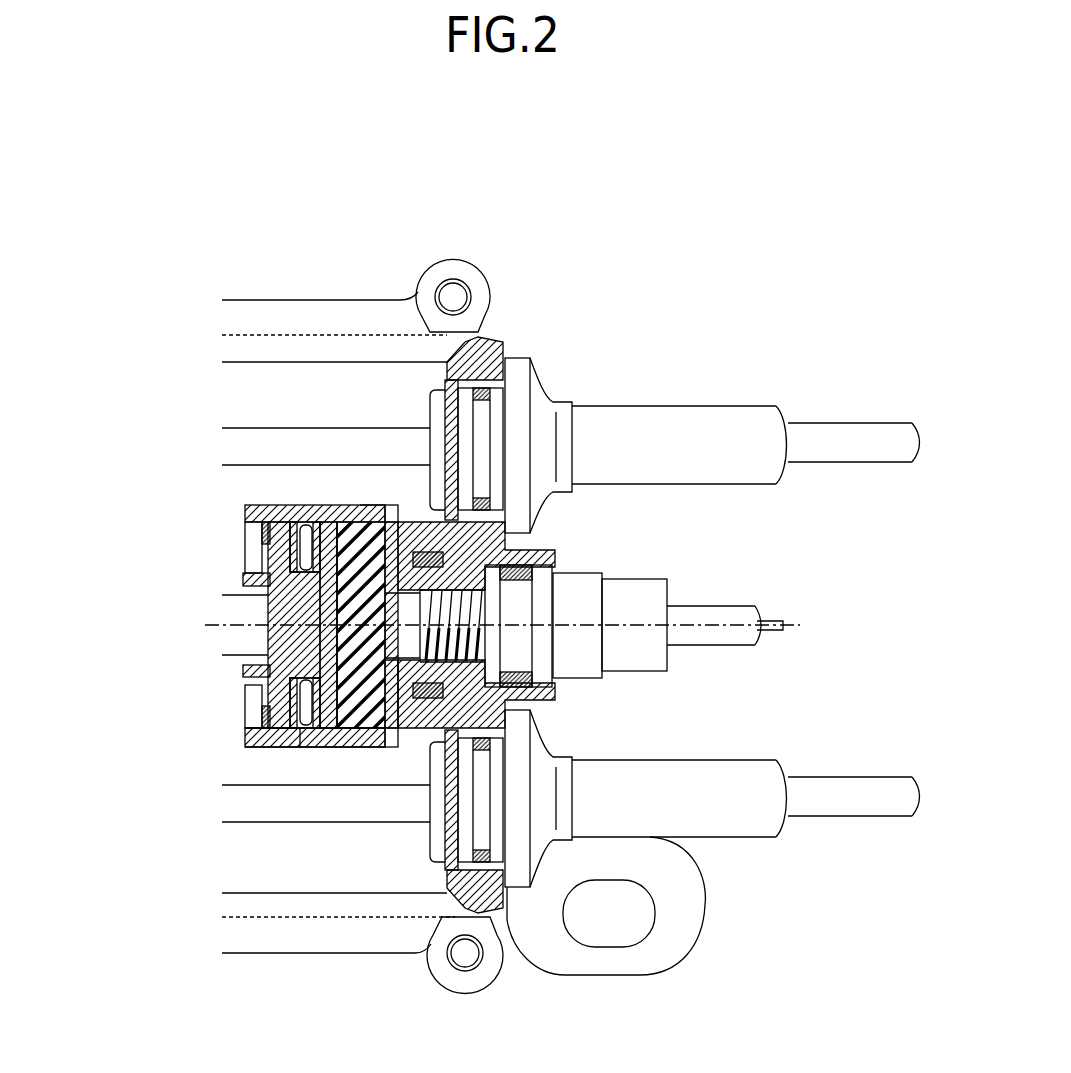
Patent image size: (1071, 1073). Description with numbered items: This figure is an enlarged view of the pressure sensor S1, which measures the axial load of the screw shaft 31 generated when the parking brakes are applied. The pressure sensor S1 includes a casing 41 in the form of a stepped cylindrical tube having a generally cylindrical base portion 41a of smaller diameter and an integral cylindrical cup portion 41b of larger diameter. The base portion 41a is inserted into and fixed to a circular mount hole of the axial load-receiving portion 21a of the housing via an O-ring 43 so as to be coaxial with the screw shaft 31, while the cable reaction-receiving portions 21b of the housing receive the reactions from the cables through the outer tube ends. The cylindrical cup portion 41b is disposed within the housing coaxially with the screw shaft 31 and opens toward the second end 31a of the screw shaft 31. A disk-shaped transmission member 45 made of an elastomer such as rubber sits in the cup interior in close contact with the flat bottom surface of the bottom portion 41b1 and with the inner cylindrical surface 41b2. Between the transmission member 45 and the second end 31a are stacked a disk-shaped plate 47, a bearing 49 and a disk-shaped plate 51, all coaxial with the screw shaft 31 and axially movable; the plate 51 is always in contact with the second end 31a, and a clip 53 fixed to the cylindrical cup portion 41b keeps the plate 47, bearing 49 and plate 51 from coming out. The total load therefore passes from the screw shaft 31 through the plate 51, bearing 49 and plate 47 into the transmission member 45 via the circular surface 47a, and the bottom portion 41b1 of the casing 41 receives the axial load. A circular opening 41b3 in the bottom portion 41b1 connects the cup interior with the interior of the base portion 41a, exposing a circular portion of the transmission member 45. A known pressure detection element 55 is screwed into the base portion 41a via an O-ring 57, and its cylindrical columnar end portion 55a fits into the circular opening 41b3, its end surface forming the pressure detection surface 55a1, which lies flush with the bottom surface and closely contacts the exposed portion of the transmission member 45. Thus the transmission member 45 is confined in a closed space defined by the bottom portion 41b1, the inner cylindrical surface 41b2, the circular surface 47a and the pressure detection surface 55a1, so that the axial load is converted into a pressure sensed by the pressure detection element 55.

The axial load-receiving portion 21a is at (490, 541).
The cable reaction-receiving portion 21b is at (492, 357).
The screw shaft 31 is at (243, 662).
The second end 31a is at (245, 745).
The casing 41 is at (245, 747).
The base portion 41a is at (462, 695).
The cylindrical cup portion 41b is at (315, 740).
The bottom portion 41b1 is at (372, 745).
The inner cylindrical surface 41b2 is at (327, 745).
The circular opening 41b3 is at (290, 740).
The O-ring 43 is at (433, 548).
The transmission member 45 is at (360, 530).
The plate 47 is at (330, 518).
The circular surface 47a is at (347, 518).
The bearing 49 is at (308, 518).
The plate 51 is at (285, 520).
The clip 53 is at (262, 520).
The pressure detection element 55 is at (545, 700).
The cylindrical columnar end portion 55a is at (400, 727).
The pressure detection surface 55a1 is at (357, 735).
The O-ring 57 is at (560, 690).
The pressure sensor S1 is at (374, 494).